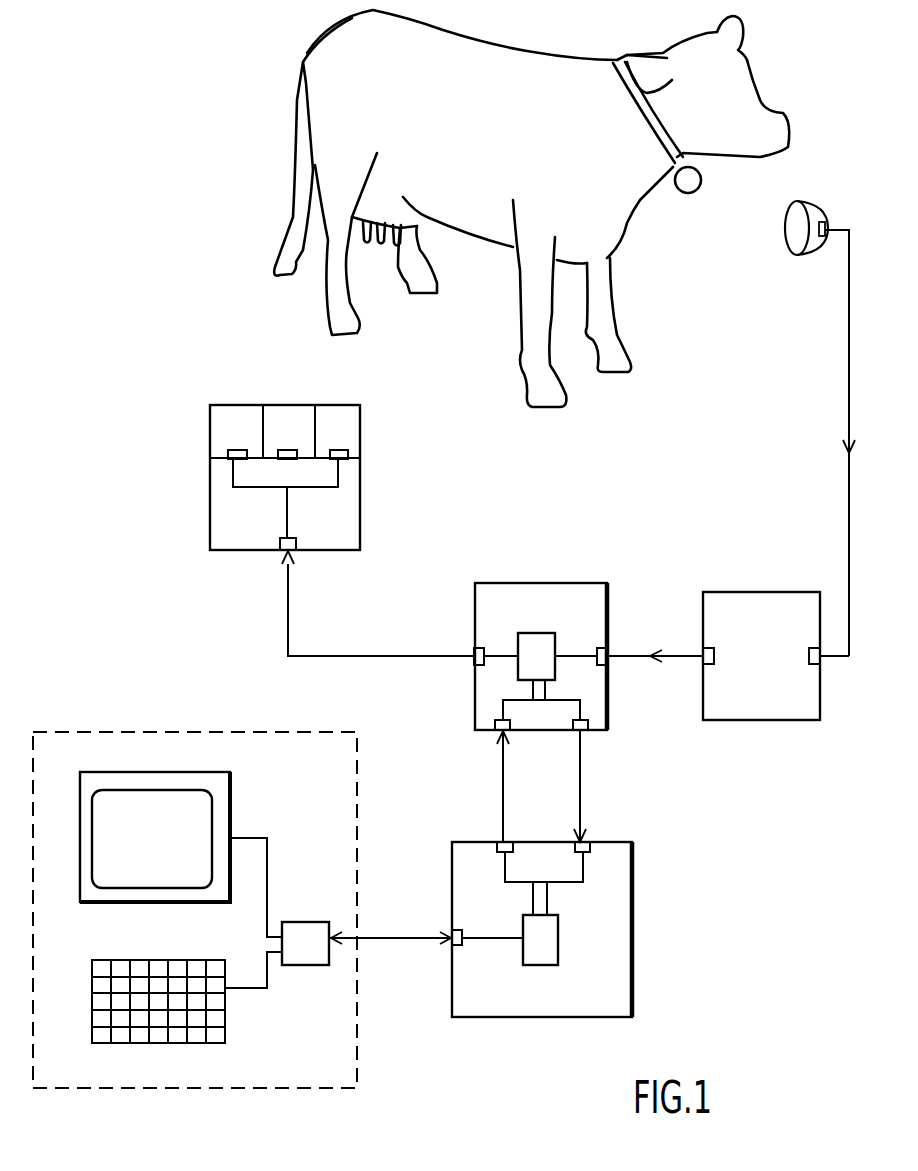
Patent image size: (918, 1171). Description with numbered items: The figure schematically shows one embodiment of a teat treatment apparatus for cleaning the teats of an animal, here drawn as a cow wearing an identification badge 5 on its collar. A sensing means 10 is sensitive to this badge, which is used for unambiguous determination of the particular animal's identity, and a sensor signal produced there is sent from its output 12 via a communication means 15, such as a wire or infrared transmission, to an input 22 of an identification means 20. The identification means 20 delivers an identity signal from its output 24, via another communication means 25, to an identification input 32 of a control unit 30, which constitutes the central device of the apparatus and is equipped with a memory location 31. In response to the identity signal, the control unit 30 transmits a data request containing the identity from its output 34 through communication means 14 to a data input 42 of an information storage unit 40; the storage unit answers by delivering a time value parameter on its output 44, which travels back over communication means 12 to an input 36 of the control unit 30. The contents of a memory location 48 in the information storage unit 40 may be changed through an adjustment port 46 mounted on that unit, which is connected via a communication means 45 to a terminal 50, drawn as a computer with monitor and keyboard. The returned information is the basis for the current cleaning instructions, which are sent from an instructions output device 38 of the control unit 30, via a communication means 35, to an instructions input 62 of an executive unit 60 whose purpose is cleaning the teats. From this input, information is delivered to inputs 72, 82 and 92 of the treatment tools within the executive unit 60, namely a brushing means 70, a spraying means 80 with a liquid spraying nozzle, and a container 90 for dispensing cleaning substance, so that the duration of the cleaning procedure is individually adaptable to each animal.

The identification badge 5 is at (700, 181).
The sensing means 10 is at (786, 232).
The output / communication means 12 is at (826, 222).
The communication means 14 is at (580, 808).
The communication means 15 is at (849, 554).
The identification means 20 is at (790, 592).
The input 22 is at (820, 665).
The output 24 is at (701, 664).
The communication means 25 is at (640, 660).
The control unit 30 is at (512, 585).
The memory location 31 is at (551, 675).
The identification input 32 is at (610, 648).
The output 34 is at (586, 733).
The communication means 35 is at (306, 655).
The input 36 is at (496, 733).
The instructions output device 38 is at (472, 652).
The information storage unit 40 is at (558, 1017).
The data input 42 is at (590, 841).
The output 44 is at (503, 841).
The communication means 45 is at (372, 937).
The adjustment port 46 is at (450, 946).
The memory location 48 is at (553, 960).
The terminal 50 is at (301, 1068).
The executive unit 60 is at (355, 512).
The instructions input 62 is at (296, 553).
The brushing means 70 is at (246, 438).
The input 72 is at (230, 462).
The spraying means 80 is at (302, 438).
The input 82 is at (284, 461).
The container 90 is at (355, 438).
The input 92 is at (345, 463).